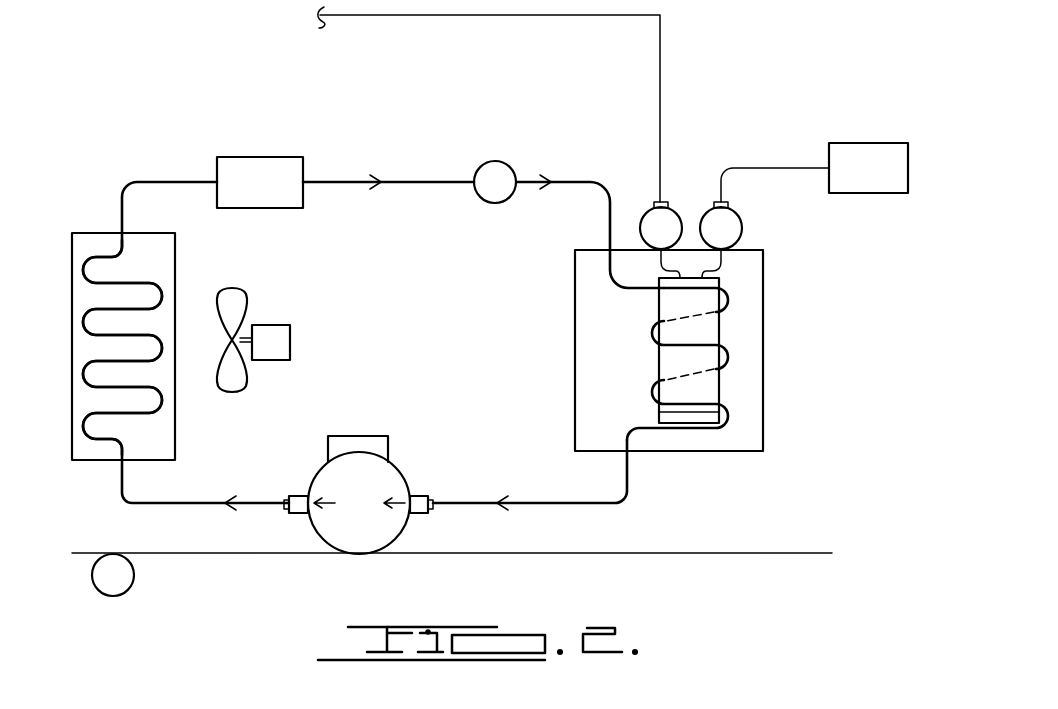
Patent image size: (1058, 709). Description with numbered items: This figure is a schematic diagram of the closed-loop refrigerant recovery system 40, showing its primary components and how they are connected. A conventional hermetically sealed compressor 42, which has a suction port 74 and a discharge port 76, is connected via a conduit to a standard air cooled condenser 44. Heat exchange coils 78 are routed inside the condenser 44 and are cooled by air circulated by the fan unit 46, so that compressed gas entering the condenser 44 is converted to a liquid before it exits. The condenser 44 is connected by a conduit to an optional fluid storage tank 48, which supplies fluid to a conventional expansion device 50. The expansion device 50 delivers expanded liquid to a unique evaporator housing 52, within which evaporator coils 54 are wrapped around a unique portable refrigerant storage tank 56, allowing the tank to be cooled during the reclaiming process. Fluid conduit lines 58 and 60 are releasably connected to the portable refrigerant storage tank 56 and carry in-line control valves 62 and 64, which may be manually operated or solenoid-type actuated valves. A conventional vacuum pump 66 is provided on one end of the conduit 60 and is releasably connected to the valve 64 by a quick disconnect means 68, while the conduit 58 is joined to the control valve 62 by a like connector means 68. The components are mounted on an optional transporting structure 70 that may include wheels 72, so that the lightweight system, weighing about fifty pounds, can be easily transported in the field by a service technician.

The refrigerant recovery system 40 is at (158, 158).
The compressor 42 is at (398, 478).
The condenser 44 is at (83, 450).
The fan unit 46 is at (280, 335).
The fluid storage tank 48 is at (245, 165).
The expansion device 50 is at (485, 165).
The evaporator housing 52 is at (582, 323).
The evaporator coils 54 is at (730, 355).
The portable refrigerant storage tank 56 is at (720, 390).
The fluid conduit line 58 is at (343, 17).
The fluid conduit line 60 is at (770, 168).
The control valve 62 is at (645, 218).
The control valve 64 is at (738, 228).
The vacuum pump 66 is at (873, 146).
The quick disconnect means 68 is at (665, 205).
The transporting structure 70 is at (778, 548).
The wheels 72 is at (118, 580).
The suction port 74 is at (425, 497).
The discharge port 76 is at (298, 496).
The heat exchange coils 78 is at (103, 257).